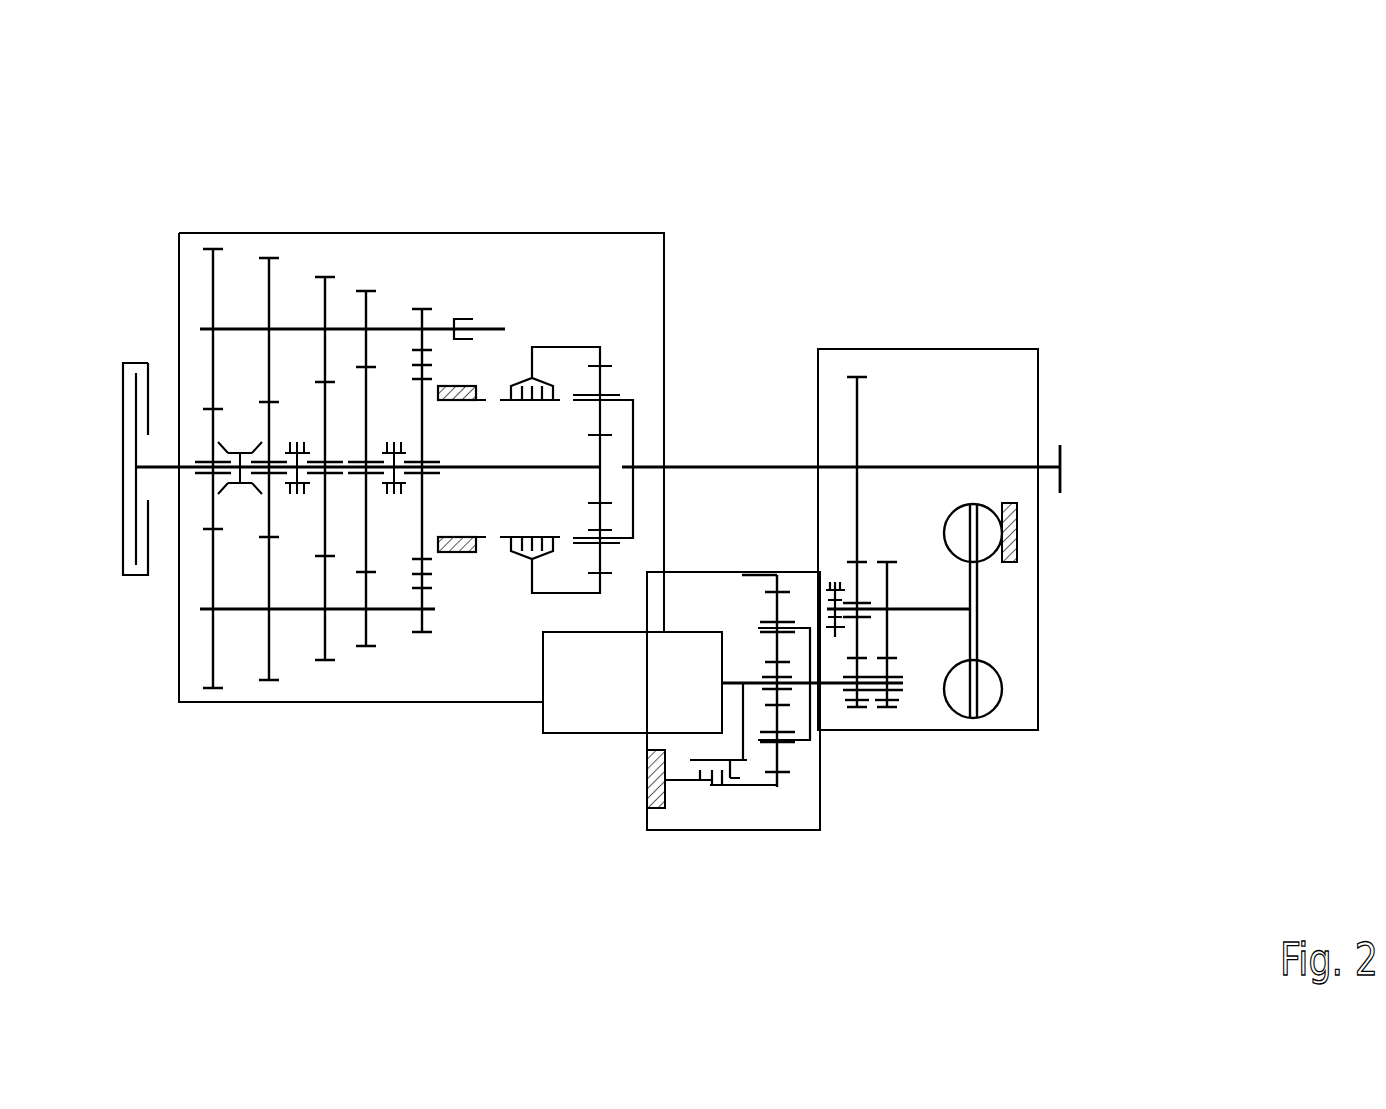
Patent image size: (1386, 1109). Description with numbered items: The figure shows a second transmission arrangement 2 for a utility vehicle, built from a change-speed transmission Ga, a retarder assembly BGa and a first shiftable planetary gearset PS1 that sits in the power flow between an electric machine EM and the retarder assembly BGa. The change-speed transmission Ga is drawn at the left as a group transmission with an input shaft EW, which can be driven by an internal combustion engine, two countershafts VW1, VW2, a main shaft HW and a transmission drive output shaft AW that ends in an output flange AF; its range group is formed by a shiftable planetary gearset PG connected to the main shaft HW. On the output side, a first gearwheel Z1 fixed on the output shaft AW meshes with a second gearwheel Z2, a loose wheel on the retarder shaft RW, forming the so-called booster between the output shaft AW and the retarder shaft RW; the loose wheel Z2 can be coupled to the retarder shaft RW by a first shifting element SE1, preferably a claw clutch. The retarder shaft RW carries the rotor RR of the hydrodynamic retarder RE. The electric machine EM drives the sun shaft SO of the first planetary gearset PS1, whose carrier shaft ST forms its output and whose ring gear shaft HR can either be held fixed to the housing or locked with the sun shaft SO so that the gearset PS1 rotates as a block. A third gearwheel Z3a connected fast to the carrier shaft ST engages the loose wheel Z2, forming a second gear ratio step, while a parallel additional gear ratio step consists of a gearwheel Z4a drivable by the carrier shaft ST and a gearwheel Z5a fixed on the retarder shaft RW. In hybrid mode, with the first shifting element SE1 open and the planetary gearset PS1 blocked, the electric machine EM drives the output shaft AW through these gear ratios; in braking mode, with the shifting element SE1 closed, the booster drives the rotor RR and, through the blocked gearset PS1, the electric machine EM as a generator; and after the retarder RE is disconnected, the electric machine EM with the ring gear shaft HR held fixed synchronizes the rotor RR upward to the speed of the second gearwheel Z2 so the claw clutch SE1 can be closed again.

The input shaft EW is at (165, 467).
The change-speed transmission Ga is at (335, 230).
The first countershaft VW1 is at (400, 328).
The second countershaft VW2 is at (300, 612).
The planetary gearset PG is at (569, 336).
The output shaft AW is at (717, 465).
The second transmission arrangement 2 is at (800, 244).
The first gearwheel Z1 is at (858, 450).
The second gearwheel Z2 is at (874, 548).
The fifth gearwheel Z5a is at (927, 608).
The output flange AF is at (1062, 483).
The retarder shaft RW is at (975, 583).
The retarder RE is at (992, 602).
The retarder assembly BGa is at (1046, 692).
The main shaft HW is at (485, 472).
The electric machine EM is at (577, 745).
The sun shaft SO is at (767, 682).
The first shiftable planetary gearset PS1 is at (741, 797).
The ring gear shaft HR is at (758, 787).
The carrier shaft ST is at (801, 743).
The first shifting element SE1 is at (834, 650).
The third gearwheel Z3a is at (857, 710).
The fourth gearwheel Z4a is at (888, 710).
The rotor RR is at (964, 700).